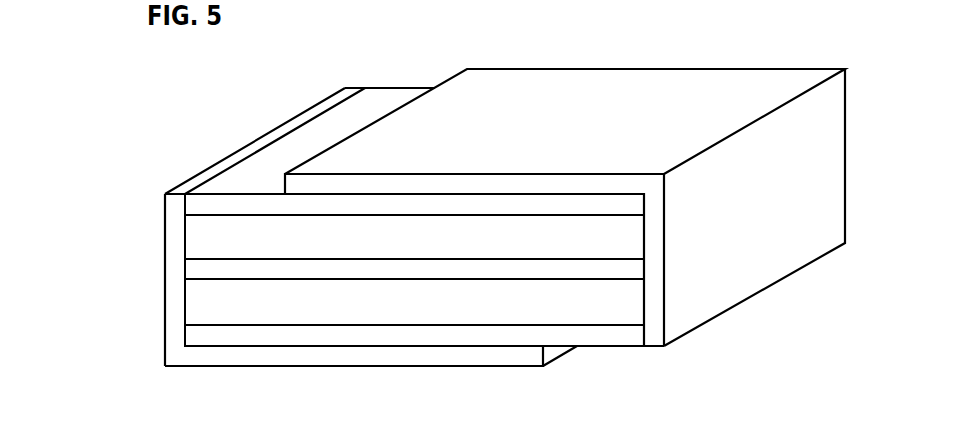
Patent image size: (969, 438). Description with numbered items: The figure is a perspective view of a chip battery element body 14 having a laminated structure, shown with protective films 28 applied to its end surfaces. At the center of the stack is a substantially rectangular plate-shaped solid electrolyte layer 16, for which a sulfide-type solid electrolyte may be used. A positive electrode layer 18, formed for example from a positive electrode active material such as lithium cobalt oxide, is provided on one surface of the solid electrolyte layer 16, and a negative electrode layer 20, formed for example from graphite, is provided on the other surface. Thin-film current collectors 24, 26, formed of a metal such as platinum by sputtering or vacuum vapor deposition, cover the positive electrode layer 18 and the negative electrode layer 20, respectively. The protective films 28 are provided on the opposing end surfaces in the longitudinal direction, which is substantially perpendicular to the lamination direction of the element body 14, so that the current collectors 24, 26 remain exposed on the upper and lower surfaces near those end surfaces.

The element body 14 is at (340, 264).
The solid electrolyte layer 16 is at (190, 270).
The positive electrode layer 18 is at (192, 237).
The negative electrode layer 20 is at (365, 302).
The current collector 24 is at (193, 205).
The current collector 26 is at (193, 338).
The protective film 28 is at (273, 137).